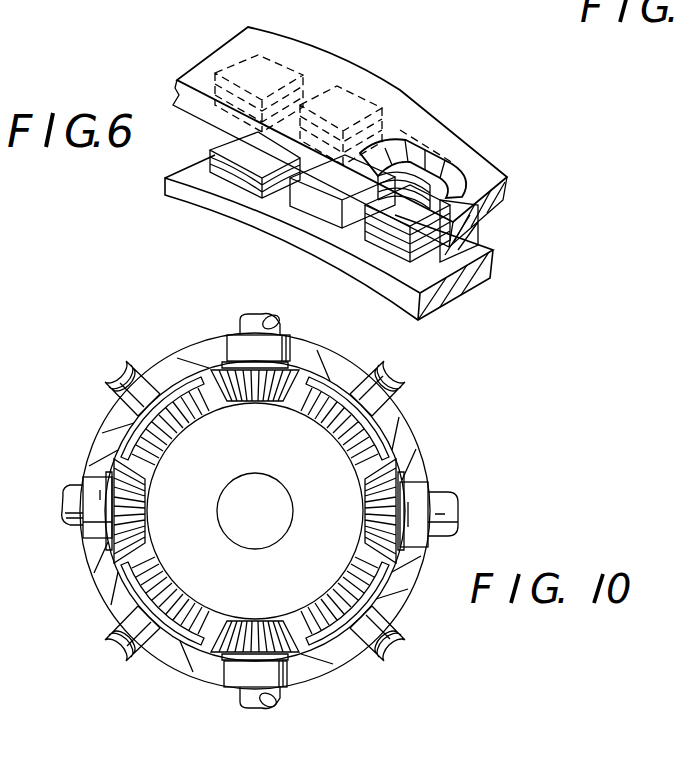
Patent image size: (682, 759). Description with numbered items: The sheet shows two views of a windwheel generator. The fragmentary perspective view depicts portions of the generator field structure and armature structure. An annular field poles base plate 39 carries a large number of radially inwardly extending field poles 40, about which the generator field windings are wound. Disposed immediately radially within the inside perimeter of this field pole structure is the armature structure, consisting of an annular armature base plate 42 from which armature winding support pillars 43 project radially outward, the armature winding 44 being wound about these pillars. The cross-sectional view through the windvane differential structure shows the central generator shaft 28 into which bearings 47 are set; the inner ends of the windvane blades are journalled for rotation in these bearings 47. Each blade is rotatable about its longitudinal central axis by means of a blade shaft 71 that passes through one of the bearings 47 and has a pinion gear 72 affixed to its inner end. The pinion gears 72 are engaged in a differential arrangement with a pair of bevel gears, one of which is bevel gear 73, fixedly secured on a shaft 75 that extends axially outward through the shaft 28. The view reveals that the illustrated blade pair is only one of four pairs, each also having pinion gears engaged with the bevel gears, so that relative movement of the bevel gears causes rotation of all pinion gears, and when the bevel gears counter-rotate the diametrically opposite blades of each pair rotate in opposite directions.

In FIG. 10, the central generator shaft 28 is at (110, 428).
In FIG. 6, the annular field poles base plate 39 is at (471, 125).
In FIG. 6, the field poles 40 is at (350, 94).
In FIG. 6, the armature base plate 42 is at (478, 248).
In FIG. 6, the armature winding support pillars 43 is at (300, 197).
In FIG. 6, the armature winding 44 is at (214, 160).
In FIG. 10, the bearings 47 is at (235, 340).
In FIG. 10, the blade shafts 71 is at (269, 318).
In FIG. 10, the pinion gears 72 is at (264, 401).
In FIG. 10, the bevel gear 73 is at (305, 460).
In FIG. 10, the shaft 75 is at (267, 508).